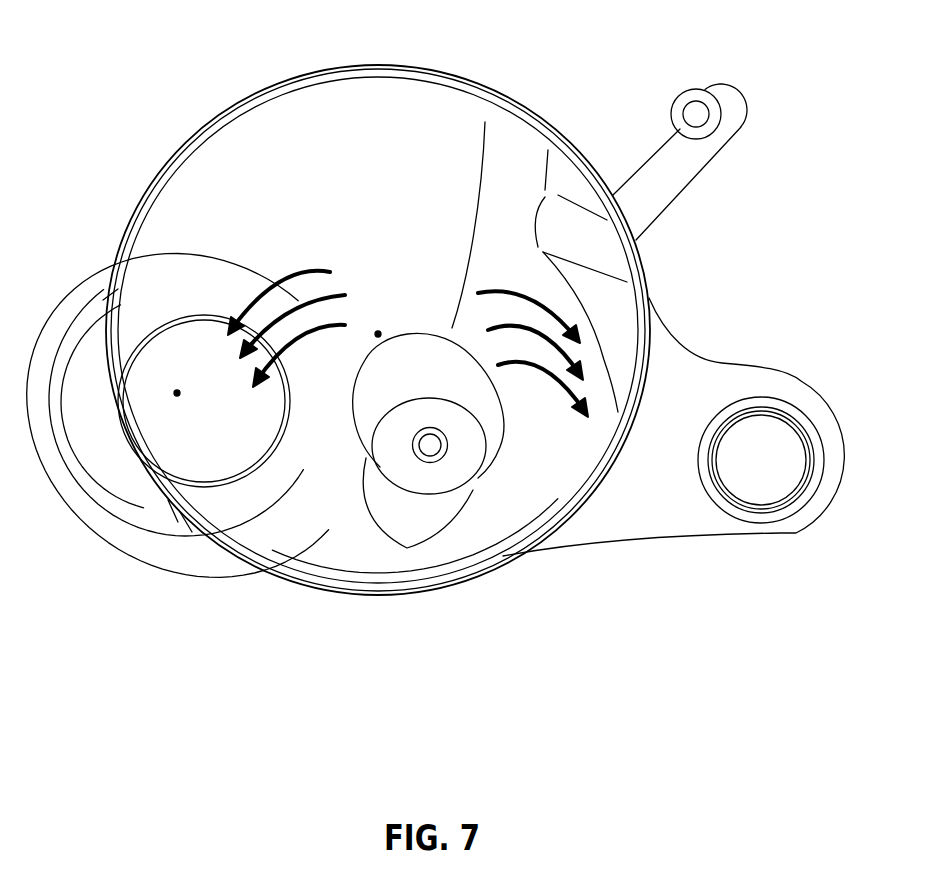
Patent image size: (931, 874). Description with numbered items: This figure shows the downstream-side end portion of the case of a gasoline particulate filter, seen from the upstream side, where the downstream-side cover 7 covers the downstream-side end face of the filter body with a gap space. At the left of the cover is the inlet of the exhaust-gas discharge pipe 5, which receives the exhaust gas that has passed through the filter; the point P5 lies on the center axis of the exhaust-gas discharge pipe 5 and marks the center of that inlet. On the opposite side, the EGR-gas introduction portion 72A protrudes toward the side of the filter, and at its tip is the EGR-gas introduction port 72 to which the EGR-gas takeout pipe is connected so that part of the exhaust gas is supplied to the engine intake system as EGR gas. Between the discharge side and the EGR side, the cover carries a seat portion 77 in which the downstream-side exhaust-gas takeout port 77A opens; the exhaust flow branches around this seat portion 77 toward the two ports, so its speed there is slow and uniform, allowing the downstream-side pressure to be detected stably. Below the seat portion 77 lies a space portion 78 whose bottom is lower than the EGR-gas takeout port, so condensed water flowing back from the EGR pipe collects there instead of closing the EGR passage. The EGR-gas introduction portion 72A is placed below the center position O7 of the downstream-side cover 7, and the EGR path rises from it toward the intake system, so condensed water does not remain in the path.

The downstream-side cover 7 is at (499, 75).
The space portion 78 is at (407, 577).
The EGR-gas introduction port 72 is at (767, 412).
The EGR-gas introduction portion 72A is at (505, 497).
The seat portion 77 is at (402, 468).
The downstream-side exhaust-gas takeout port 77A is at (429, 454).
The exhaust-gas discharge pipe 5 is at (120, 540).
The center of inlet of exhaust-gas discharge pipe P5 is at (178, 397).
The center position of downstream-side cover O7 is at (378, 332).